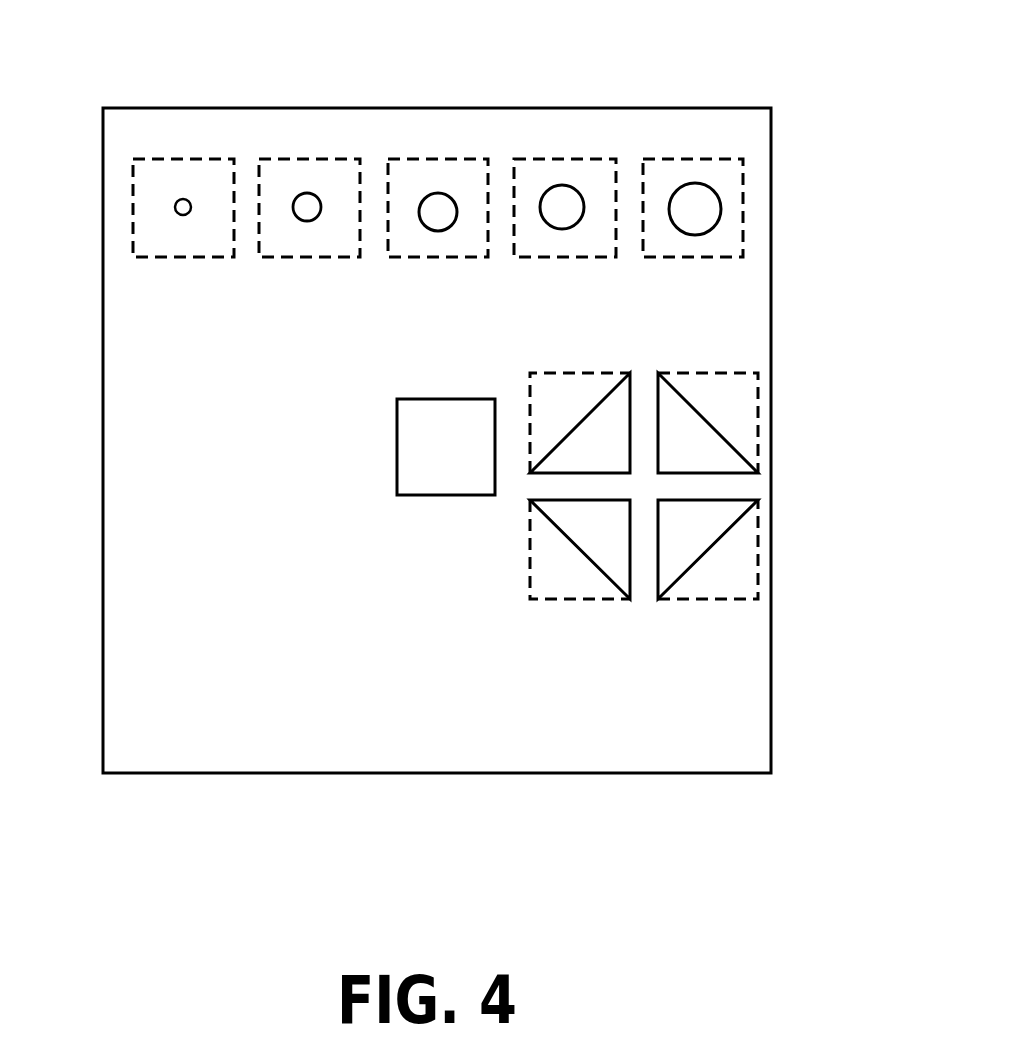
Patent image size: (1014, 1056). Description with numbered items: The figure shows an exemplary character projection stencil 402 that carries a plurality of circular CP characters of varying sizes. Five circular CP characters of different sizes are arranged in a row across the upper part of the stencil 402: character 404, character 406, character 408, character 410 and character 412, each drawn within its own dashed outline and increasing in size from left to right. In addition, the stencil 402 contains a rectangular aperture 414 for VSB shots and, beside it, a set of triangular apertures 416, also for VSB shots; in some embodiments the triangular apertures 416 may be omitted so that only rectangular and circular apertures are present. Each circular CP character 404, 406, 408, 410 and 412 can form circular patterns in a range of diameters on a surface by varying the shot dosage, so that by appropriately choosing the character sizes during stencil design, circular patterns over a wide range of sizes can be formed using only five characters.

The stencil 402 is at (772, 286).
The character 404 is at (187, 198).
The character 406 is at (308, 193).
The character 408 is at (447, 195).
The character 410 is at (573, 187).
The character 412 is at (702, 185).
The rectangular aperture 414 is at (388, 460).
The triangular apertures 416 is at (720, 430).